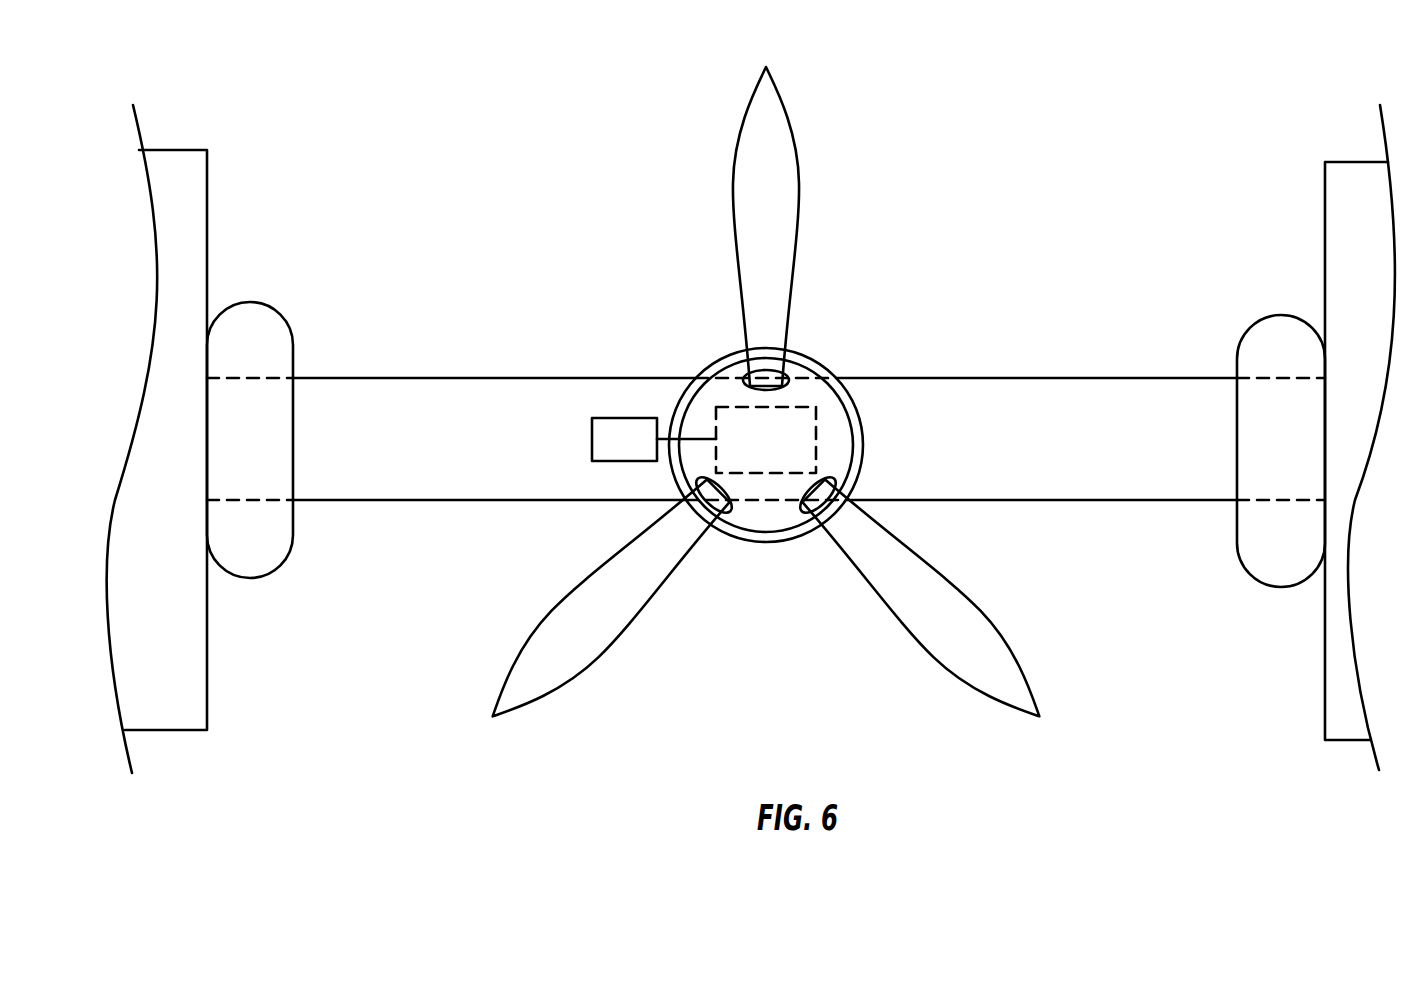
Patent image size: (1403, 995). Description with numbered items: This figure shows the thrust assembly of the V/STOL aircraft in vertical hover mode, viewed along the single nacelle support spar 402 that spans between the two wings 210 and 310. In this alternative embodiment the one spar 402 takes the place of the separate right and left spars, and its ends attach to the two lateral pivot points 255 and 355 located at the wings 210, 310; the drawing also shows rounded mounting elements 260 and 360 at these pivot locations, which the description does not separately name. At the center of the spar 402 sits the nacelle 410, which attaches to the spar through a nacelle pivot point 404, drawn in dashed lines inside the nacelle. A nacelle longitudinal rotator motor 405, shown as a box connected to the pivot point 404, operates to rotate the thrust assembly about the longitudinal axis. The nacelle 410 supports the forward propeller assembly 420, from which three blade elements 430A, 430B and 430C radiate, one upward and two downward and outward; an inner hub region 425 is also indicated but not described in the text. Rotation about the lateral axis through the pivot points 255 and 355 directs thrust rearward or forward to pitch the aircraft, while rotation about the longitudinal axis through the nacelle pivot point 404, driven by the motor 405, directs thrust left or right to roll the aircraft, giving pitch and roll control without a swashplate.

The wing 310 is at (182, 150).
The first bearing 360 is at (256, 302).
The lateral pivot point 355 is at (285, 440).
The wing 210 is at (1350, 162).
The second bearing 260 is at (1283, 315).
The lateral pivot point 255 is at (1250, 440).
The nacelle support spar 402 is at (1044, 378).
The hub interior shaft passage 425 is at (720, 388).
The nacelle 410 is at (818, 358).
The forward propeller assembly 420 is at (860, 420).
The nacelle pivot point 404 is at (818, 430).
The nacelle longitudinal rotator motor 405 is at (592, 438).
The first blade 430A is at (620, 640).
The second blade 430B is at (910, 640).
The third blade 430C is at (800, 180).